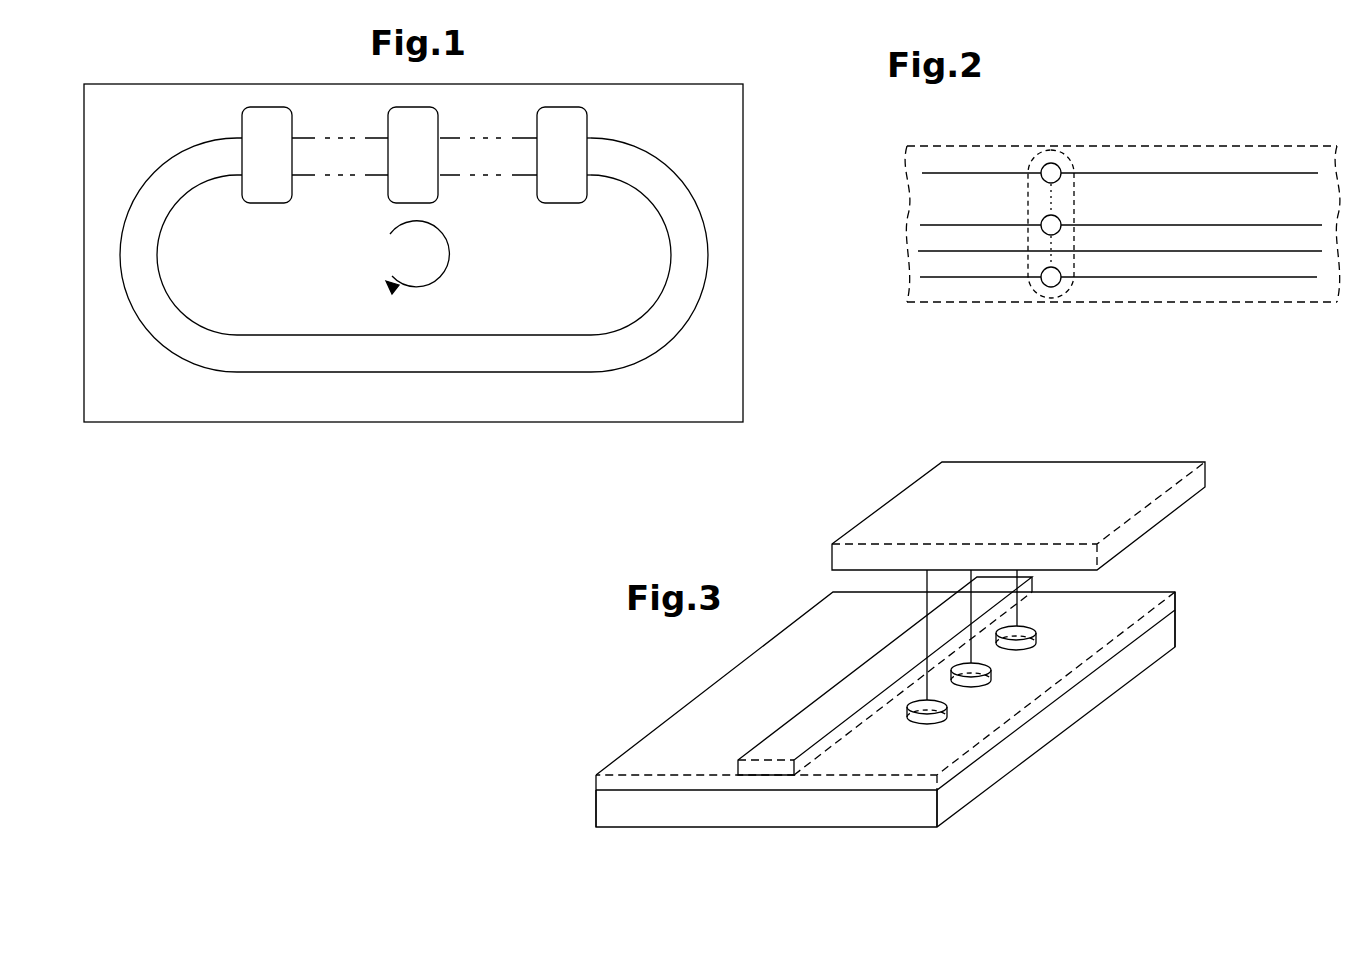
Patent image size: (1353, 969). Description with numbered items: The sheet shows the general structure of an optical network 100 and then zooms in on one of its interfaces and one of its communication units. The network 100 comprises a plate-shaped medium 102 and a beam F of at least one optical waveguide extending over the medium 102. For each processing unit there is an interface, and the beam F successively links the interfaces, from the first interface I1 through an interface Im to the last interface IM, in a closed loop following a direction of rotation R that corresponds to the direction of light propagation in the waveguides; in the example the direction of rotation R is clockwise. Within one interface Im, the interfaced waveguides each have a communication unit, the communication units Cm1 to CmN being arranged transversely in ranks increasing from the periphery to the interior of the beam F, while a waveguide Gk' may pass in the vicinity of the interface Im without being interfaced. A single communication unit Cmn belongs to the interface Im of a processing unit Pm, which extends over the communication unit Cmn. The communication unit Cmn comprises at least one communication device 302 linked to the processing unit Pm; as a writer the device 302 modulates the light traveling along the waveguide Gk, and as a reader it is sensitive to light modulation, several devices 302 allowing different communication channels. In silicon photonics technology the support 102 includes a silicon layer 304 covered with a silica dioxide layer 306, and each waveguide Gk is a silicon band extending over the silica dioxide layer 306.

In FIG. 1, the optical network 100 is at (259, 456).
In FIG. 1, the medium 102 is at (723, 407).
In FIG. 3, the medium 102 is at (503, 732).
In FIG. 1, the beam F is at (668, 190).
In FIG. 2, the beam F is at (1242, 146).
In FIG. 1, the first interface I1 is at (278, 174).
In FIG. 1, the interface Im is at (424, 174).
In FIG. 2, the interface Im is at (1034, 160).
In FIG. 1, the last interface IM is at (574, 174).
In FIG. 1, the direction of rotation R is at (406, 261).
In FIG. 2, the non-interfaced waveguide Gk' is at (1120, 311).
In FIG. 2, the first communication unit Cm1 is at (1040, 177).
In FIG. 2, the communication unit Cmn is at (1060, 216).
In FIG. 3, the communication unit Cmn is at (927, 733).
In FIG. 2, the last communication unit CmN is at (1060, 295).
In FIG. 3, the processing unit Pm is at (1160, 473).
In FIG. 3, the communication device 302 is at (927, 705).
In FIG. 3, the optical waveguide Gk is at (885, 676).
In FIG. 3, the silica dioxide layer 306 is at (600, 782).
In FIG. 3, the silicon layer 304 is at (600, 812).